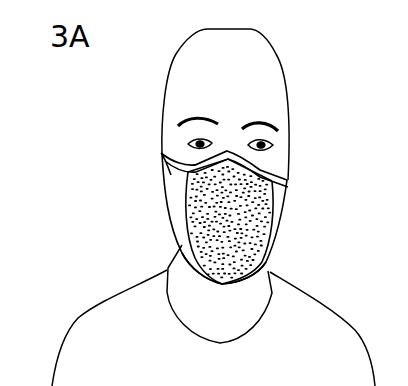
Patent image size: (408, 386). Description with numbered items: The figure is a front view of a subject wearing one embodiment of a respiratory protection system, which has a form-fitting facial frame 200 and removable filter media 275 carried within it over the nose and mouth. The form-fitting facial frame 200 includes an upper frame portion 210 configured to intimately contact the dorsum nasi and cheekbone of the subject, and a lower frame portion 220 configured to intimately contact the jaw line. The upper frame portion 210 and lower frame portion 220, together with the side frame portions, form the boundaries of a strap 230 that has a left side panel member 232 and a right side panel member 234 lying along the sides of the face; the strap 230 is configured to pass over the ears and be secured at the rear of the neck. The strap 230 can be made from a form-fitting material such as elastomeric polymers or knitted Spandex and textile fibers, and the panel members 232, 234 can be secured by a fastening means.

The form-fitting facial frame 200 is at (306, 202).
The upper frame portion 210 is at (290, 173).
The lower frame portion 220 is at (267, 273).
The strap 230 is at (178, 202).
The left side panel member 232 is at (282, 197).
The right side panel member 234 is at (175, 187).
The removable filter media 275 is at (215, 230).